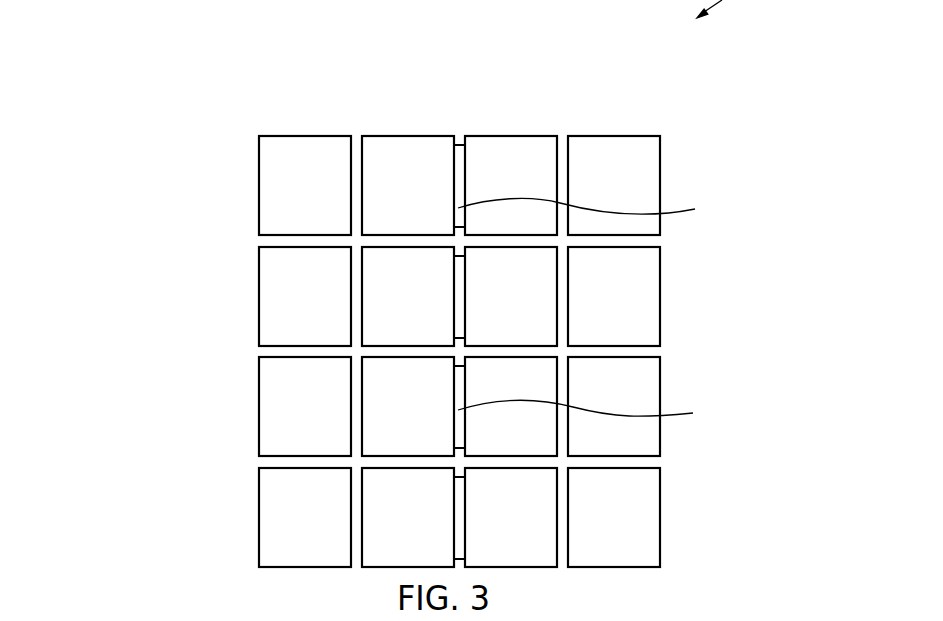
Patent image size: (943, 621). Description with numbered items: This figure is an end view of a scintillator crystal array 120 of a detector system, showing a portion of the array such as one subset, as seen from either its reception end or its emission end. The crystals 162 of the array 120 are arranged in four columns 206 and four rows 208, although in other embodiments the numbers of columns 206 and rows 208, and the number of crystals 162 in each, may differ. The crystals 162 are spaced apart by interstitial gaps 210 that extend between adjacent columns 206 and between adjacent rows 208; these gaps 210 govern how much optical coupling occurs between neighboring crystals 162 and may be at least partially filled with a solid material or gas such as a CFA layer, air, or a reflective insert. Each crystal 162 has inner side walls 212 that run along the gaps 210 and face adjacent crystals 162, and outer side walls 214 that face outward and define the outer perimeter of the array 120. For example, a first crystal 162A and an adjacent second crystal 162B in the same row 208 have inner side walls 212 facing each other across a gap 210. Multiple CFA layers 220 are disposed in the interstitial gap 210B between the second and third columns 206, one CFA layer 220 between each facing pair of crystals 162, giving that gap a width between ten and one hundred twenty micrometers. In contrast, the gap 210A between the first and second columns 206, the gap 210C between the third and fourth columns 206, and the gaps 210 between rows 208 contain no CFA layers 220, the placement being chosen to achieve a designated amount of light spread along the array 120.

The scintillator crystal array 120 is at (712, 620).
The crystal 162 is at (268, 165).
The first crystal 162A is at (383, 137).
The second crystal 162B is at (508, 147).
The column 206 is at (296, 122).
The row 208 is at (245, 202).
The interstitial gap 210 is at (295, 249).
The interstitial gap 210A is at (348, 163).
The interstitial gap 210B is at (459, 117).
The interstitial gap 210C is at (555, 163).
The inner side wall 212 is at (462, 172).
The outer side wall 214 is at (488, 137).
The CFA layer 220 is at (595, 309).